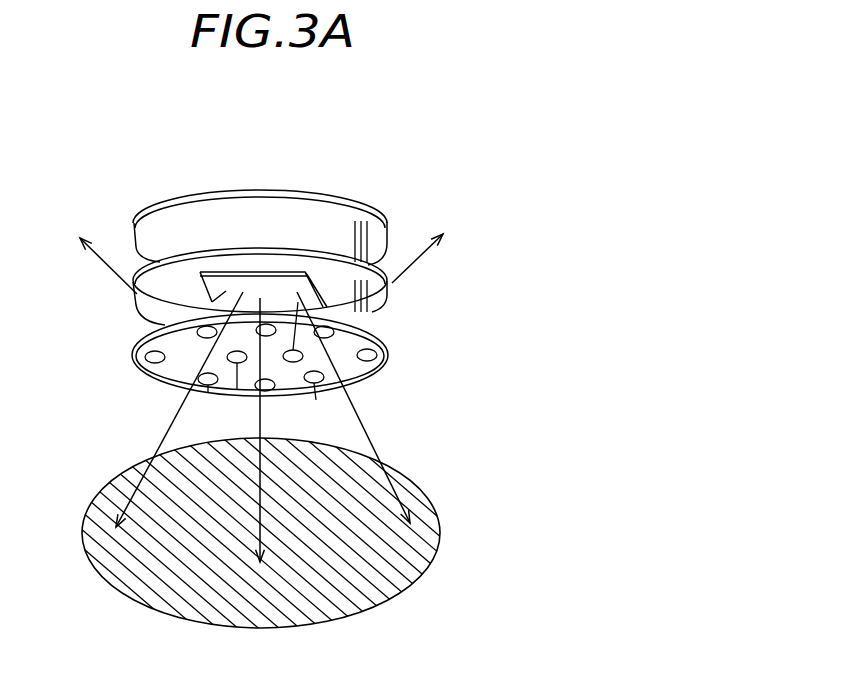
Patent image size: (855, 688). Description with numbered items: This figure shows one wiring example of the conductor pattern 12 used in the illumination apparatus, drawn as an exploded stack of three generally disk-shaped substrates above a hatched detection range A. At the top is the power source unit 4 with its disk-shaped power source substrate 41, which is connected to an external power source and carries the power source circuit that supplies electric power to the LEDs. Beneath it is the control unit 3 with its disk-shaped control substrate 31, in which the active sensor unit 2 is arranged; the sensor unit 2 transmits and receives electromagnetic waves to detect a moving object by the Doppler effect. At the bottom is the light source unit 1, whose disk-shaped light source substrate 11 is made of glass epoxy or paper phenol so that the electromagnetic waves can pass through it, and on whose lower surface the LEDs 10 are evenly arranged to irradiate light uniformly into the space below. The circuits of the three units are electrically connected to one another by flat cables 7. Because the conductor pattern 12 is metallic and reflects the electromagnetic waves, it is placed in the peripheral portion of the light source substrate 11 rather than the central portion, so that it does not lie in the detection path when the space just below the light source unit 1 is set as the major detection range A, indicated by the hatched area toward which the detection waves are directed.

The light source unit 1 is at (393, 363).
The active sensor unit 2 is at (228, 278).
The control unit 3 is at (325, 268).
The power source unit 4 is at (293, 228).
The flat cable 7 is at (363, 240).
The light-emitting diode 10 is at (316, 386).
The light source substrate 11 is at (183, 362).
The conductor pattern 12 is at (133, 352).
The control substrate 31 is at (178, 287).
The power source substrate 41 is at (252, 215).
The detection range A is at (407, 575).